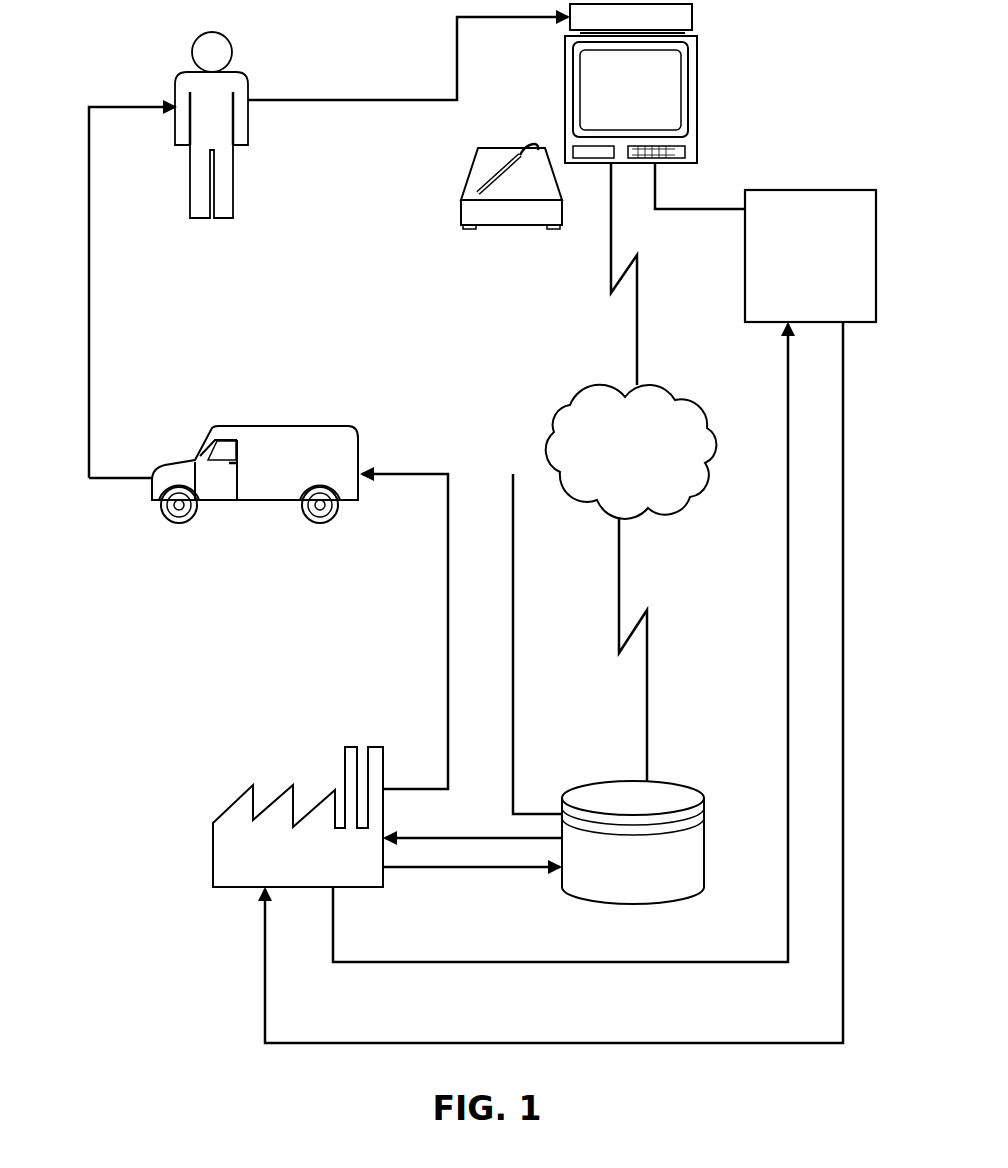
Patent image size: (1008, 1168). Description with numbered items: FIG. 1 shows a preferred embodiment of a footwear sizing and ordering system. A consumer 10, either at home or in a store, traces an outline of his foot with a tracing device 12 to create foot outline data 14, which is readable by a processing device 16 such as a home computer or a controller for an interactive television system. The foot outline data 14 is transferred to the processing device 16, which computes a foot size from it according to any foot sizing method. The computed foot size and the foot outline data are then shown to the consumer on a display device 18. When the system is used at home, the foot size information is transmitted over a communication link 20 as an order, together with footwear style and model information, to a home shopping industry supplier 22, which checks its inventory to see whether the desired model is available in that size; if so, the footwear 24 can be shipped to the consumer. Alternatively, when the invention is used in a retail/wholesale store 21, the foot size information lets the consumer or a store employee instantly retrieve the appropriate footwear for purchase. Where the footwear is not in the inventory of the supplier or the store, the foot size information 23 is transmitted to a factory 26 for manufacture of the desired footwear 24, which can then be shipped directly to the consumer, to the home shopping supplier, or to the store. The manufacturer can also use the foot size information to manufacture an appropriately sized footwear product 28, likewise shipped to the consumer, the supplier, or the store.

The consumer 10 is at (235, 37).
The tracing device 12 is at (500, 178).
The foot outline data 14 is at (284, 101).
The processing device 16 is at (694, 12).
The display device 18 is at (698, 68).
The communication link 20 is at (637, 305).
The retail/wholesale store 21 is at (814, 190).
The home shopping industry supplier 22 is at (683, 784).
The foot size information 23 is at (486, 836).
The footwear 24 is at (513, 617).
The factory 26 is at (235, 800).
The appropriately sized footwear product 28 is at (447, 617).